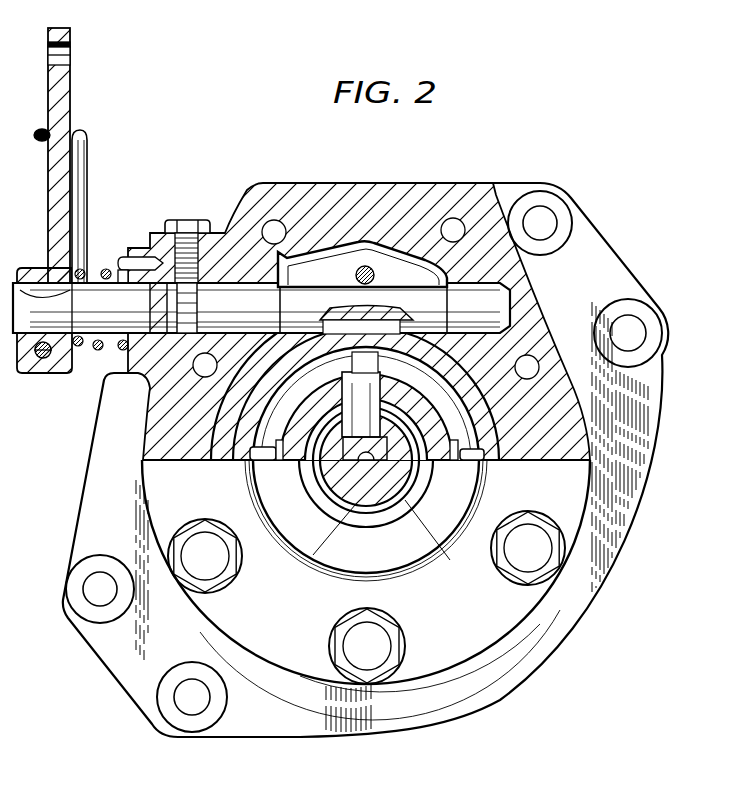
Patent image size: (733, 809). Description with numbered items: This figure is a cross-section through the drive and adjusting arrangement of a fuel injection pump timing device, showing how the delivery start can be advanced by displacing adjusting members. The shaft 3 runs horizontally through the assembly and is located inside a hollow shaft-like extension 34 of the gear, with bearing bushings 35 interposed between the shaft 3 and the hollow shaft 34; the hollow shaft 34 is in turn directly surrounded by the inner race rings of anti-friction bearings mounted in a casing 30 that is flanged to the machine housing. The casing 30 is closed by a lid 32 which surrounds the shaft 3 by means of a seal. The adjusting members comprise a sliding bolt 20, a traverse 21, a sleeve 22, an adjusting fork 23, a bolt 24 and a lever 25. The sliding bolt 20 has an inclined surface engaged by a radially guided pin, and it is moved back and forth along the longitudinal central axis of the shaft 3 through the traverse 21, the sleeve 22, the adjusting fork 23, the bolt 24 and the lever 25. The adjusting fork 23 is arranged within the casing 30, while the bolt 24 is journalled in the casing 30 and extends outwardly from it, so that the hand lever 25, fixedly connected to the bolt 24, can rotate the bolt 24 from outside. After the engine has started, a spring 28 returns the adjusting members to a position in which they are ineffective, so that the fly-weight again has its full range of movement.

The shaft 3 is at (337, 560).
The sliding bolt 20 is at (420, 577).
The traverse 21 is at (357, 398).
The sleeve 22 is at (460, 423).
The adjusting fork 23 is at (333, 270).
The bolt 24 is at (523, 303).
The lever 25 is at (73, 95).
The spring 28 is at (86, 196).
The casing 30 is at (253, 197).
The lid 32 is at (443, 660).
The hollow shaft-like extension 34 is at (472, 470).
The bearing bushings 35 is at (280, 467).